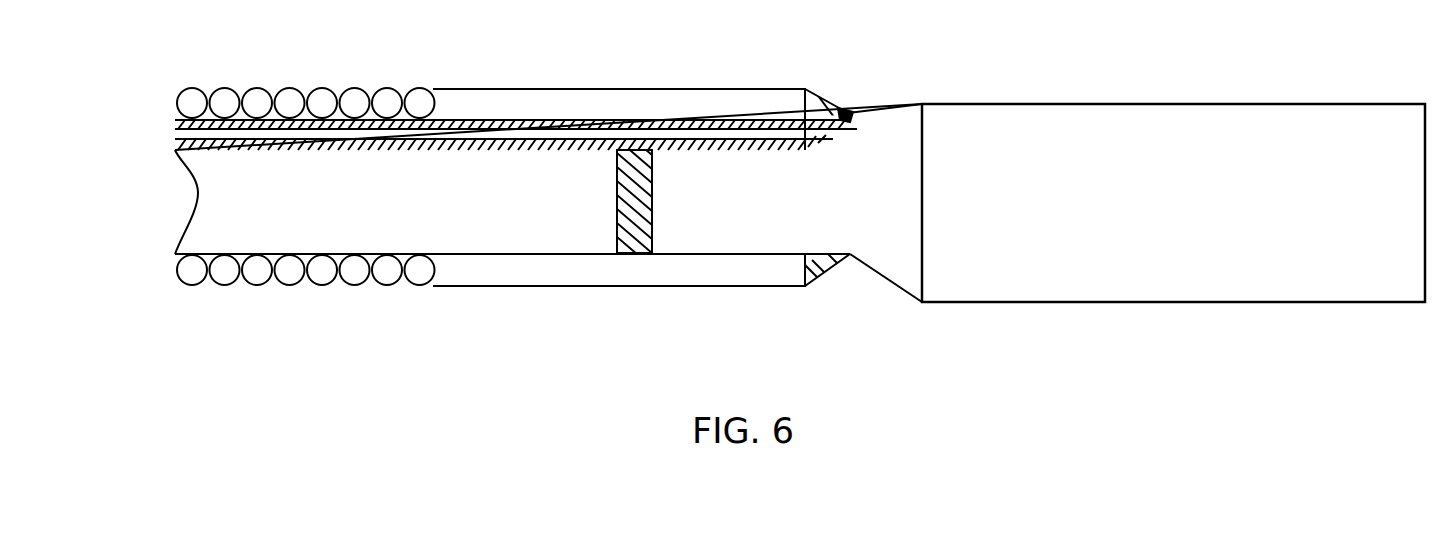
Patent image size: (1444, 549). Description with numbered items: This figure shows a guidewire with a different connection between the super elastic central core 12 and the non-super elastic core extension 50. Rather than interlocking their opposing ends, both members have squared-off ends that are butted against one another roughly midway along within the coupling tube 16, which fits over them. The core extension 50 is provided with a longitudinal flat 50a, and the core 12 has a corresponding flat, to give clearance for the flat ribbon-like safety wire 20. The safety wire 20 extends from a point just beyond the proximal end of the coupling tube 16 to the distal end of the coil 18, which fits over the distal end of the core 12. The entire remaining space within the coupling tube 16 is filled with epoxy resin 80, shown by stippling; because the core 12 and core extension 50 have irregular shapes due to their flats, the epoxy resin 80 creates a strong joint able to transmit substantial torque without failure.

The central core 12 is at (299, 206).
The coupling tube 16 is at (653, 102).
The coil 18 is at (353, 285).
The safety wire 20 is at (465, 147).
The core extension 50 is at (1209, 211).
The longitudinal flat 50a is at (776, 151).
The epoxy resin 80 is at (847, 110).